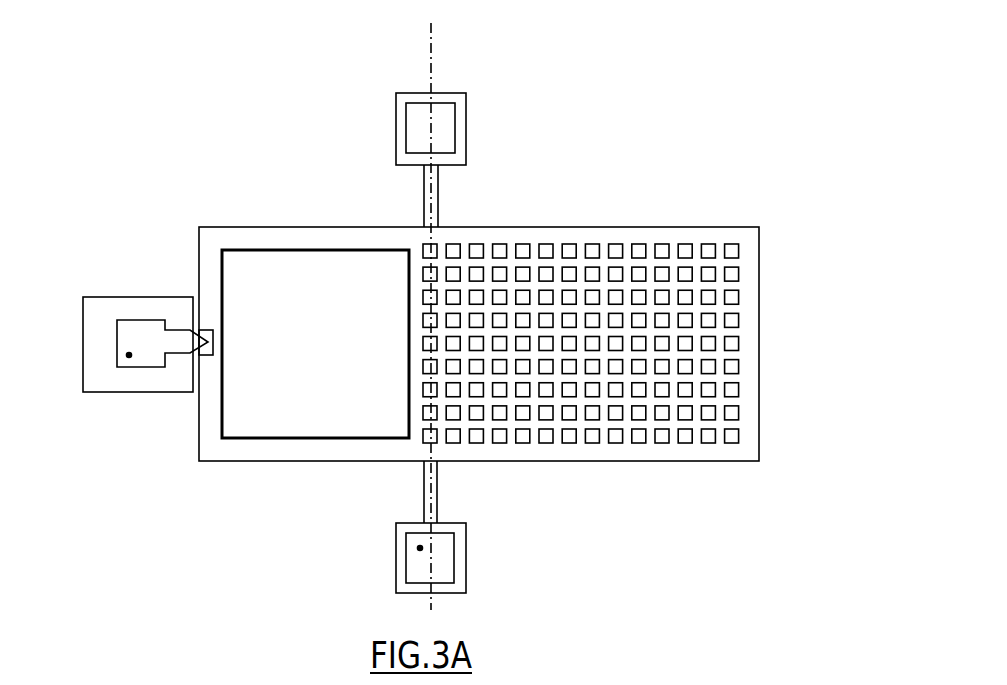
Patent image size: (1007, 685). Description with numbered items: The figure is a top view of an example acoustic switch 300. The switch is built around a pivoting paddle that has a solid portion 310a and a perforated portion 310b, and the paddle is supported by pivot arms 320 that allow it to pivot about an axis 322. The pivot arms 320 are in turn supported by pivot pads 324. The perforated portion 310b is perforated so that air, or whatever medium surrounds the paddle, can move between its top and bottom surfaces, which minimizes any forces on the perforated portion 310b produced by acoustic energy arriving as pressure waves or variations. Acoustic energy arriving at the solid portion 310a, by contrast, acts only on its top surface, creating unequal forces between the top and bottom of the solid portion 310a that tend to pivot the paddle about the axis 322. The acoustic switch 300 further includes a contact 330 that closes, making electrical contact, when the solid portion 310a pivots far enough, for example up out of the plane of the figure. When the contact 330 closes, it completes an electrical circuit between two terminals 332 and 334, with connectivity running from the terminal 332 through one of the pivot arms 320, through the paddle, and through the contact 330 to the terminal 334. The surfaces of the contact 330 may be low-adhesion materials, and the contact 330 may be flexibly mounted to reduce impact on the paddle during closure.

The acoustic switch 300 is at (738, 115).
The solid portion 310a is at (310, 226).
The perforated portion 310b is at (600, 226).
The pivot arms 320 is at (438, 205).
The axis 322 is at (431, 52).
The pivot pads 324 is at (466, 131).
The contact 330 is at (190, 333).
The terminal 332 is at (418, 548).
The terminal 334 is at (129, 358).